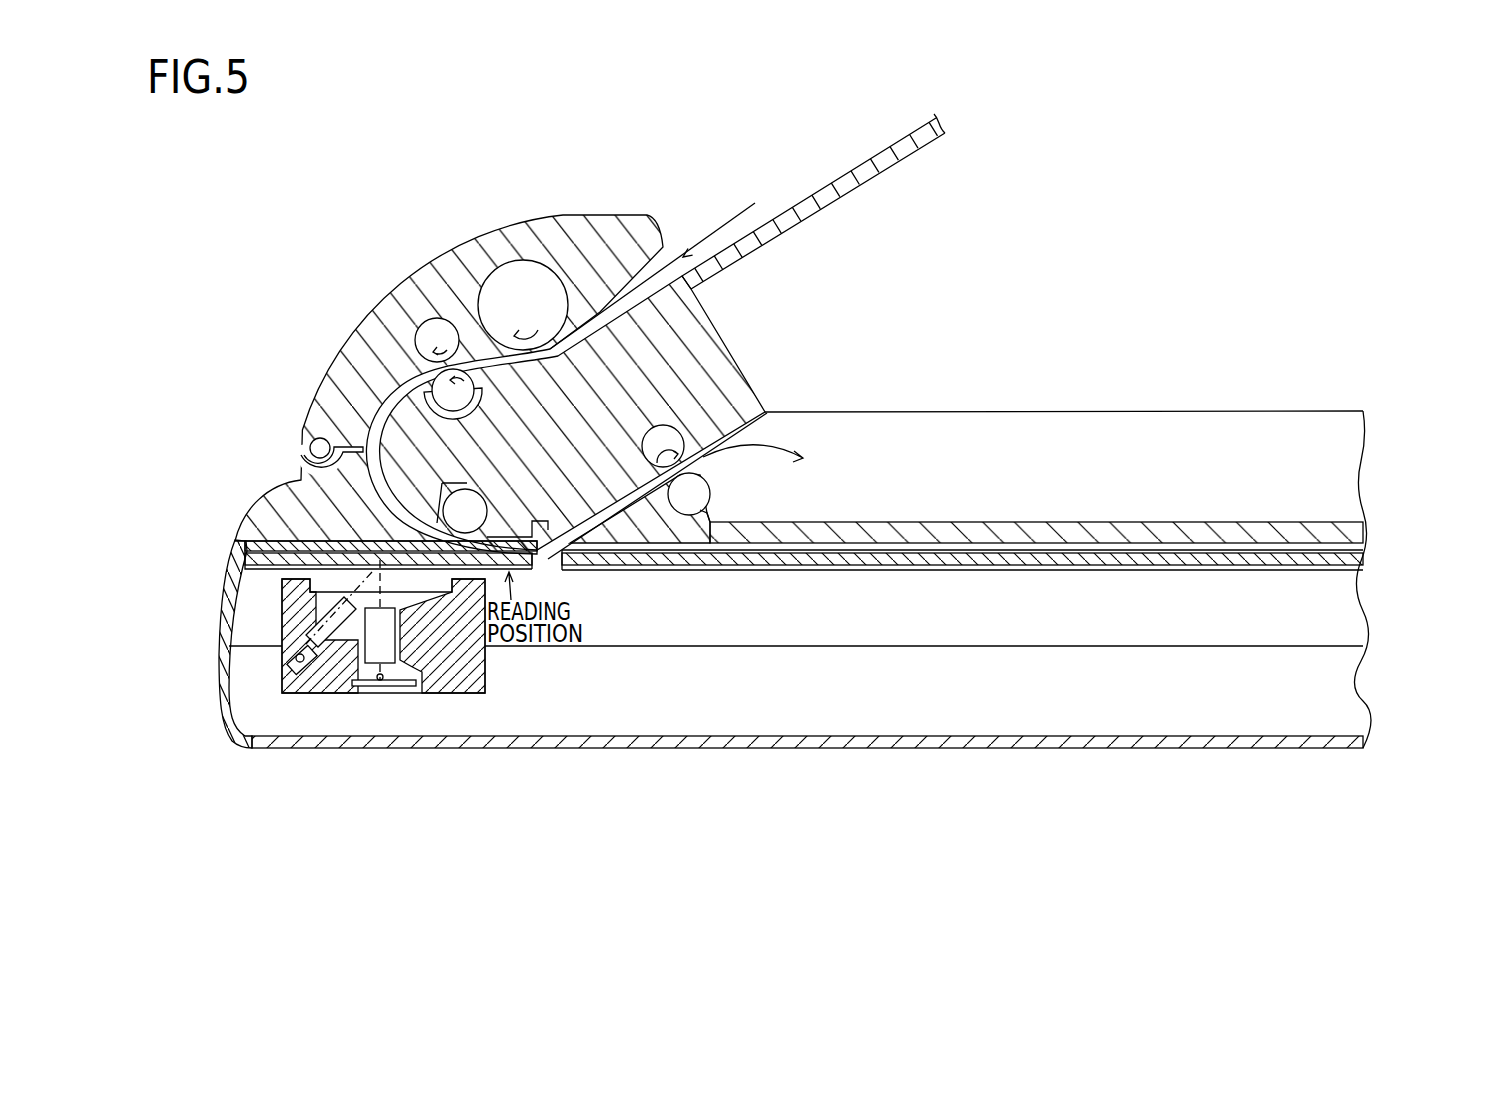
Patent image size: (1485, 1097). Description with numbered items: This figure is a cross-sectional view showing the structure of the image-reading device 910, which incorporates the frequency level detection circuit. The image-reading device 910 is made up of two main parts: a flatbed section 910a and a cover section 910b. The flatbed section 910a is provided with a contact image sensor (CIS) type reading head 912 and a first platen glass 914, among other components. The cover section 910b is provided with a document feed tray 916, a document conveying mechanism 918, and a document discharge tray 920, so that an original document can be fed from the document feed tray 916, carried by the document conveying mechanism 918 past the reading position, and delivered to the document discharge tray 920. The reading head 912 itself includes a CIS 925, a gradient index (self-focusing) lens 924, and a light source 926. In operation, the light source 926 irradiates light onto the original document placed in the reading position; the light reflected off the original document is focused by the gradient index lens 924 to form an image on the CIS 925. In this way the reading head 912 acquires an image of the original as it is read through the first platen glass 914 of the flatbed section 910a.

The image-reading device 910 is at (1181, 298).
The flatbed section 910a is at (1342, 677).
The cover section 910b is at (1333, 465).
The reading head 912 is at (295, 611).
The first platen glass 914 is at (520, 557).
The document feed tray 916 is at (812, 205).
The document conveying mechanism 918 is at (365, 335).
The document discharge tray 920 is at (906, 522).
The gradient index lens 924 is at (390, 638).
The CIS 925 is at (377, 682).
The light source 926 is at (302, 673).